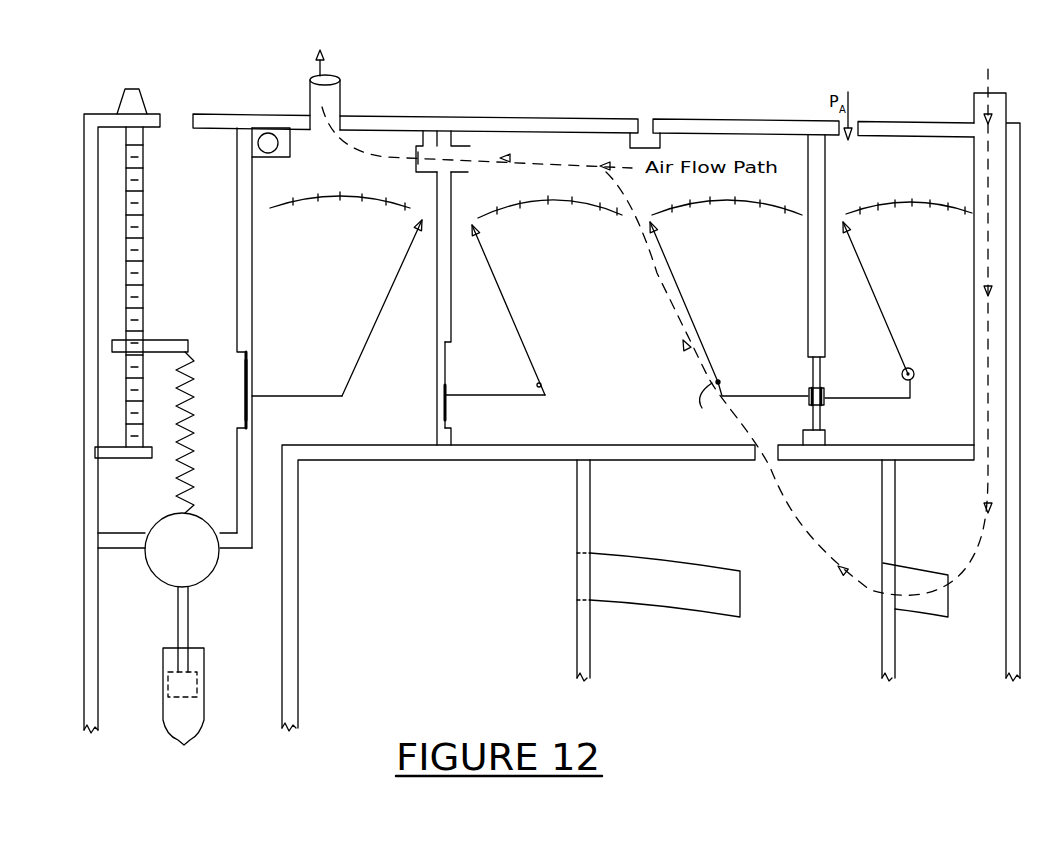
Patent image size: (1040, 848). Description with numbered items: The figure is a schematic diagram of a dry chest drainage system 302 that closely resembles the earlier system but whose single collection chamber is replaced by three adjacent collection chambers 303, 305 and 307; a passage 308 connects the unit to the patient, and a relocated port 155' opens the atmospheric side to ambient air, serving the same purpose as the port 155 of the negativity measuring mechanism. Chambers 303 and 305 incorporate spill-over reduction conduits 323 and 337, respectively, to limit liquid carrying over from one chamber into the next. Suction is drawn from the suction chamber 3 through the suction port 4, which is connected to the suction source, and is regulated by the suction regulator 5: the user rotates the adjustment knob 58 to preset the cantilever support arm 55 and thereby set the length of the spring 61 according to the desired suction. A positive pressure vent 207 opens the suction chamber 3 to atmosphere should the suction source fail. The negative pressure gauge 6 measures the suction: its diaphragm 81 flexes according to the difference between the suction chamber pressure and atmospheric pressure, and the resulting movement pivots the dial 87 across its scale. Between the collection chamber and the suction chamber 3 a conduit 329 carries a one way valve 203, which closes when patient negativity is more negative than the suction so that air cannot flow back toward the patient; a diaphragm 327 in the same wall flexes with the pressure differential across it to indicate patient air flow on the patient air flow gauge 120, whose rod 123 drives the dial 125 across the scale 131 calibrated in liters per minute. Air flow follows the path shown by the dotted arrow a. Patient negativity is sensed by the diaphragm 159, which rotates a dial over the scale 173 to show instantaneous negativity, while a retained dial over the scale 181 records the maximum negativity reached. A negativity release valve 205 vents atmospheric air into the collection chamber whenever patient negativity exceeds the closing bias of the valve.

The adjustment knob 58 is at (140, 90).
The suction regulator 5 is at (172, 130).
The positive pressure vent 207 is at (270, 134).
The suction port 4 is at (342, 93).
The one way valve 203 is at (420, 150).
The conduit 329 is at (460, 159).
The negativity release valve 205 is at (645, 134).
The port 155' is at (872, 114).
The passage 308 is at (981, 118).
The scale 181 is at (840, 197).
The scale 173 is at (663, 212).
The scale 131 is at (525, 211).
The patient air flow gauge 120 is at (518, 303).
The dial 125 is at (492, 281).
The rod 123 is at (455, 392).
The diaphragm 327 is at (447, 410).
The dial 87 is at (392, 298).
The diaphragm 81 is at (254, 375).
The suction chamber 3 is at (333, 343).
The negative pressure gauge 6 is at (391, 342).
The cantilever support arm 55 is at (150, 340).
The spring 61 is at (190, 445).
The port 155 is at (729, 309).
The dotted arrow a is at (706, 404).
The diaphragm 159 is at (828, 408).
The collection chamber 303 is at (964, 511).
The collection chamber 307 is at (419, 559).
The collection chamber 305 is at (757, 547).
The spill-over reduction conduit 337 is at (607, 555).
The system 302 is at (532, 540).
The spill-over reducing conduit 323 is at (913, 613).